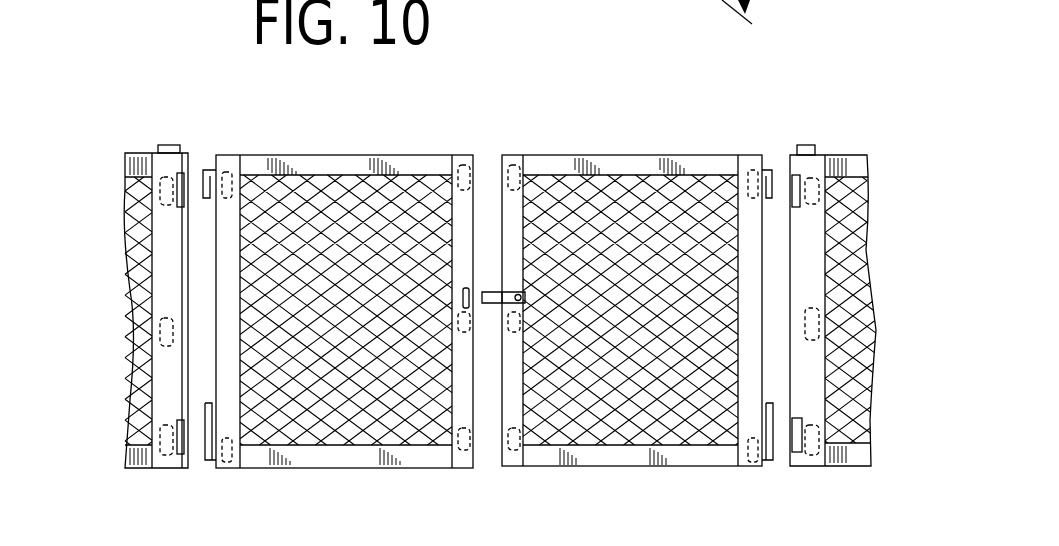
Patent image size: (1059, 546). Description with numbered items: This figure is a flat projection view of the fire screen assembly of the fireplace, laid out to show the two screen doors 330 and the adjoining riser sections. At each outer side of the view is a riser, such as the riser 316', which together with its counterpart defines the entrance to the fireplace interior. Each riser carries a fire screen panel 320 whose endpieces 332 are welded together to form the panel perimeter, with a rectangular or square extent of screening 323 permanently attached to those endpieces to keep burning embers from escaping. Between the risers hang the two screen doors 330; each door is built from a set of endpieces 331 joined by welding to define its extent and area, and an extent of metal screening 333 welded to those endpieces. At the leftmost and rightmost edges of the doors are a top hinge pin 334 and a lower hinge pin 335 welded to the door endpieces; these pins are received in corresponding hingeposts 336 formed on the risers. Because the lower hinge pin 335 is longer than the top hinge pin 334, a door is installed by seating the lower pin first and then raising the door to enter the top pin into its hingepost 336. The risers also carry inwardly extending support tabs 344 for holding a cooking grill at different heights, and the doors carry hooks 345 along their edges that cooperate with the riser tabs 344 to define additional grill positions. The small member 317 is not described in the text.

The riser 316' is at (127, 310).
The tab 317 is at (805, 145).
The fire screen panel 320 is at (130, 208).
The screening 323 is at (135, 317).
The screen door 330 is at (369, 475).
The endpieces 331 is at (453, 158).
The endpieces 332 is at (178, 160).
The metal screening 333 is at (337, 190).
The top hinge pin 334 is at (208, 170).
The lower hinge pin 335 is at (208, 462).
The hingepost 336 is at (182, 452).
The support tab 344 is at (160, 332).
The hook 345 is at (468, 178).